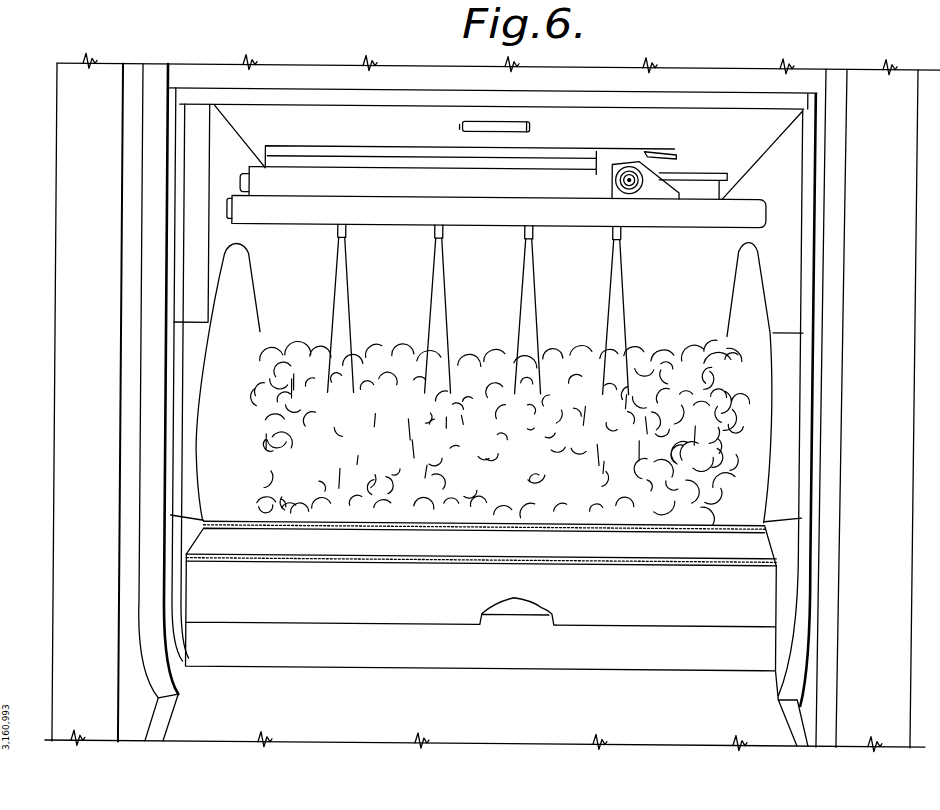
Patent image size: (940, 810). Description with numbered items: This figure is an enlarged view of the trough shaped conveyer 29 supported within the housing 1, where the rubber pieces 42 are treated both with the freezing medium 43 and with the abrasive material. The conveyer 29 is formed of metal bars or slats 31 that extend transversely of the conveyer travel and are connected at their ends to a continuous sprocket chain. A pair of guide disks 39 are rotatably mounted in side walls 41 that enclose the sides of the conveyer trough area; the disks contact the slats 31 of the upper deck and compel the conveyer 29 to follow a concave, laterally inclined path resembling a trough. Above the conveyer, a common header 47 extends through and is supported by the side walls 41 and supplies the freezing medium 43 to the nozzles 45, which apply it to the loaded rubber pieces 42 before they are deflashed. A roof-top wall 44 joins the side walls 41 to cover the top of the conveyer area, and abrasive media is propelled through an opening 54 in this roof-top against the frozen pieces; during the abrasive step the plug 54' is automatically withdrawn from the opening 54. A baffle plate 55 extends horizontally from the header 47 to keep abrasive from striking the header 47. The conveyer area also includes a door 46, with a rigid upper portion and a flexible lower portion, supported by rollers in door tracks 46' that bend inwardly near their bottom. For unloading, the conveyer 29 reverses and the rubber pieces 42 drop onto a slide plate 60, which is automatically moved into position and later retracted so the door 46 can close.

The housing 1 is at (800, 393).
The conveyer 29 is at (518, 553).
The slats 31 is at (380, 601).
The guide disks 39 is at (250, 296).
The side walls 41 is at (198, 177).
The rubber pieces 42 is at (392, 466).
The freezing medium 43 is at (616, 289).
The roof-top wall 44 is at (736, 159).
The nozzles 45 is at (529, 234).
The door 46 is at (492, 89).
The door tracks 46' is at (851, 408).
The header 47 is at (519, 186).
The opening 54 is at (470, 130).
The plug 54' is at (557, 131).
The baffle plate 55 is at (300, 163).
The slide plate 60 is at (485, 722).